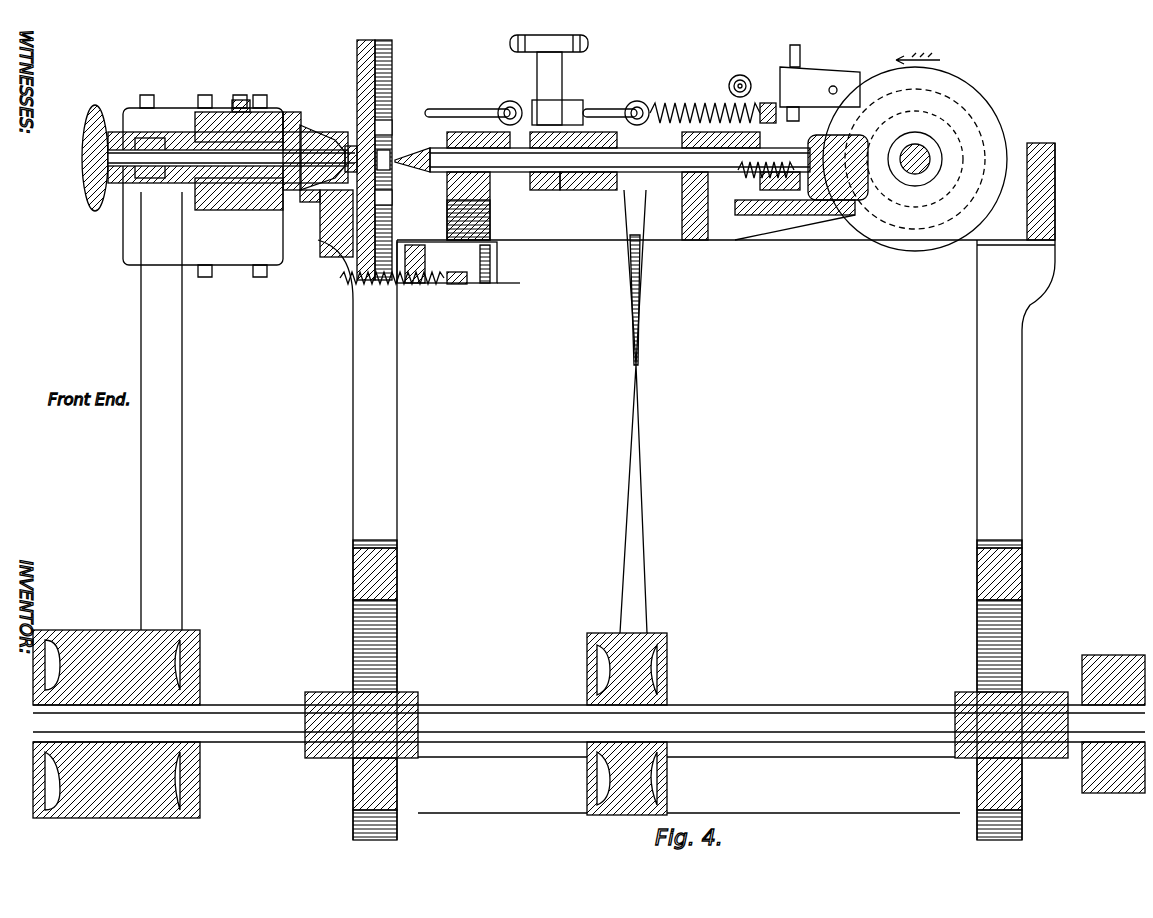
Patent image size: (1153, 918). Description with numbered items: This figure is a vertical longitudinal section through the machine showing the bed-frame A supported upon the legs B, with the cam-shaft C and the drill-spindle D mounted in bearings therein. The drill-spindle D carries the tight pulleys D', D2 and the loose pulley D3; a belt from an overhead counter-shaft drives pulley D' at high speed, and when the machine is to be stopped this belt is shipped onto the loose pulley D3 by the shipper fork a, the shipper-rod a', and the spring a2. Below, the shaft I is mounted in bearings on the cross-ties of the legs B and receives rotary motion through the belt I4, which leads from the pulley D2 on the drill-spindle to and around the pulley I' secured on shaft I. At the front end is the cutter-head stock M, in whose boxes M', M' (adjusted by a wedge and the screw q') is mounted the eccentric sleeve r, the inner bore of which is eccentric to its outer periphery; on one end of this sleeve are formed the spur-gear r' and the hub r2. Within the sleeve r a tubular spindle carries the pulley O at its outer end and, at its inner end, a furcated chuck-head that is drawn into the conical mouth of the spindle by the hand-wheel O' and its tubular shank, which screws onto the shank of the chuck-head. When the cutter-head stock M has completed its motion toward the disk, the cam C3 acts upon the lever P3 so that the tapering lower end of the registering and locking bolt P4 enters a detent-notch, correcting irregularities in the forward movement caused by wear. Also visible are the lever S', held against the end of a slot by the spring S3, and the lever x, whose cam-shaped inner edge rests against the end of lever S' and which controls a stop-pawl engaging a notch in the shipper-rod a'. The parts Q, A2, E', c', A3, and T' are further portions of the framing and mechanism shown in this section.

The bed-frame A is at (694, 491).
The legs B is at (686, 666).
The shaft I is at (589, 723).
The pulley I' is at (636, 724).
The post Q is at (161, 411).
The hand-wheel O' is at (84, 158).
The cutter-head stock M is at (203, 186).
The boxes M' is at (239, 202).
The pulley O is at (150, 174).
The eccentric sleeve r is at (231, 137).
The screw q' is at (245, 90).
The spur-gear r' is at (296, 139).
The hub r2 is at (310, 203).
The bracket A2 is at (350, 235).
The plate E' is at (365, 160).
The pin c' is at (383, 169).
The shipper fork a is at (549, 80).
The shipper-rod a' is at (537, 104).
The spring a2 is at (700, 105).
The drill-spindle D is at (631, 186).
The tight pulley D' is at (548, 190).
The loose pulley D3 is at (583, 190).
The tight pulley D2 is at (660, 185).
The bracket A3 is at (730, 240).
The belt I4 is at (633, 411).
The registering and locking bolt P4 is at (735, 83).
The lever P3 is at (820, 83).
The cam C3 is at (915, 152).
The cam-shaft C is at (915, 159).
The slide T' is at (447, 262).
The lever x is at (509, 285).
The spring S3 is at (402, 285).
The lever S' is at (461, 292).